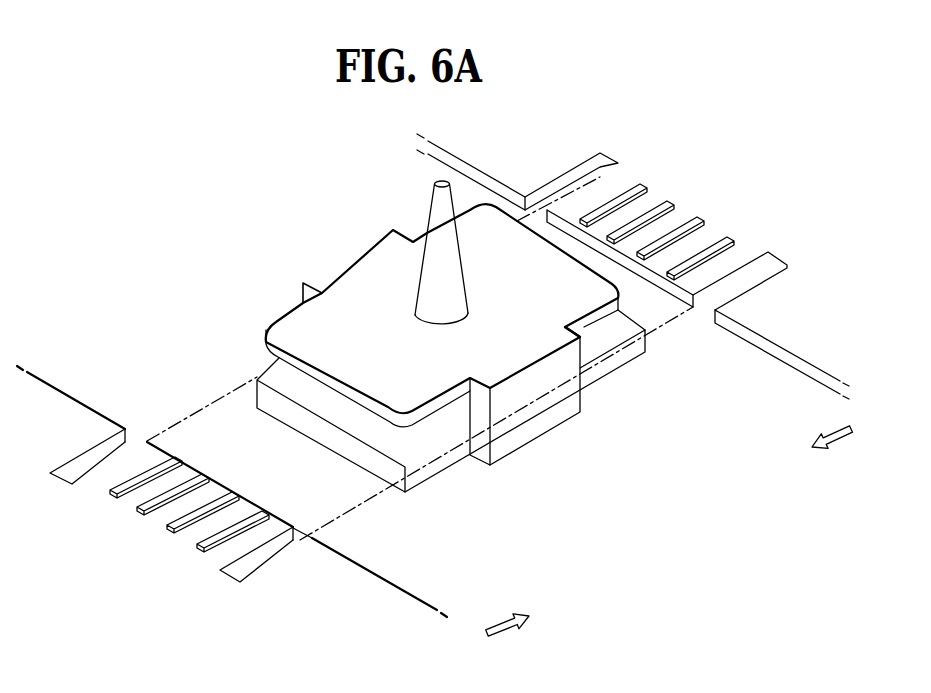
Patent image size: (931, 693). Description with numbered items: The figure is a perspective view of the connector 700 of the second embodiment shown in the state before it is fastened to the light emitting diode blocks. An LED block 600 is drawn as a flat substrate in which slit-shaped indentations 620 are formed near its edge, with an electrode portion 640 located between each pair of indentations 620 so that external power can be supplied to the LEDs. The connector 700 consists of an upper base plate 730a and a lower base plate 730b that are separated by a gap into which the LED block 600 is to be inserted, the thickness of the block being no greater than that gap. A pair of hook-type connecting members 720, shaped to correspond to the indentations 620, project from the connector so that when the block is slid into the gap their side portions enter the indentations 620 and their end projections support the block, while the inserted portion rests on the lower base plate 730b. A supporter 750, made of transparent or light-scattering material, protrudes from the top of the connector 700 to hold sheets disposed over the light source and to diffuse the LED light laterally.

The LED block 600 is at (56, 372).
The indentation 620 is at (106, 448).
The electrode portion 640 is at (173, 519).
The connector 700 is at (287, 268).
The connecting member 720 is at (582, 410).
The upper base plate 730a is at (567, 313).
The lower base plate 730b is at (647, 349).
The supporter 750 is at (443, 209).